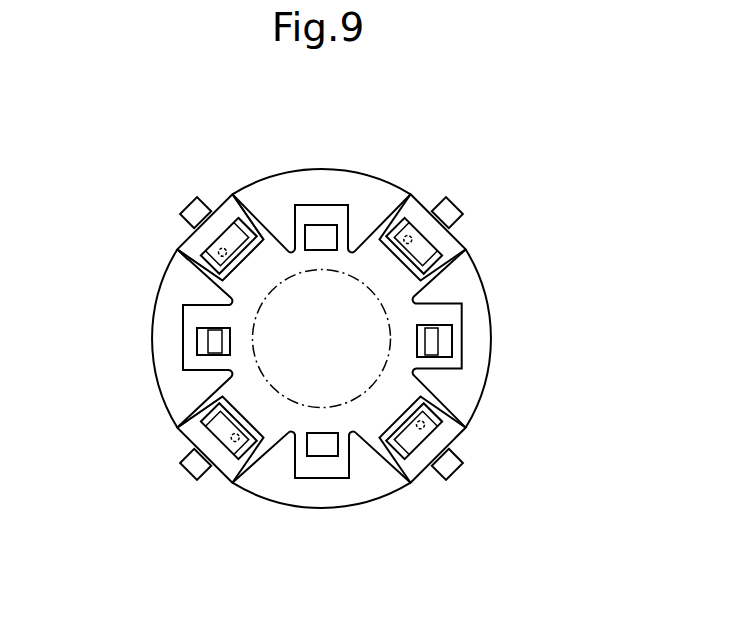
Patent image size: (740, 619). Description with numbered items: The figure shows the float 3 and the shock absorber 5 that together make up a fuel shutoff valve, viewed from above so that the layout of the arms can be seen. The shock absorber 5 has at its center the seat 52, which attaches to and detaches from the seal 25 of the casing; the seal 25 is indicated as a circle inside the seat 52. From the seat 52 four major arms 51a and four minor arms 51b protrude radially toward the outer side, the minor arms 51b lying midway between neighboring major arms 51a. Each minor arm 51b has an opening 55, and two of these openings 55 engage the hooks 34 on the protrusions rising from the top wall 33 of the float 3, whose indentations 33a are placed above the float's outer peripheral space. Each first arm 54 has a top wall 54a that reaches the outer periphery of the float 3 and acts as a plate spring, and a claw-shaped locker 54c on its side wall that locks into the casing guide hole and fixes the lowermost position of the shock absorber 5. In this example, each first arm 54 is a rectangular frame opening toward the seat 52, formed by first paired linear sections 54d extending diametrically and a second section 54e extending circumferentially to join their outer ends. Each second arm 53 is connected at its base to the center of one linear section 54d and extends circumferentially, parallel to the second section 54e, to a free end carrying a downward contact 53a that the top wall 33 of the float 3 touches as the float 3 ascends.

The float 3 is at (265, 175).
The shock absorber 5 is at (310, 484).
The seal 25 is at (398, 298).
The top wall 33 is at (376, 203).
The indentations 33a is at (481, 327).
The hook 34 is at (213, 356).
The major arms 51a is at (208, 267).
The minor arms 51b is at (318, 223).
The seat 52 is at (295, 433).
The second arms 53 is at (228, 248).
The contact 53a is at (217, 254).
The first arms 54 is at (412, 440).
The top wall 54a is at (463, 429).
The locker 54c is at (193, 213).
The first paired linear sections 54d is at (241, 243).
The second section 54e is at (177, 252).
The opening 55 is at (197, 333).